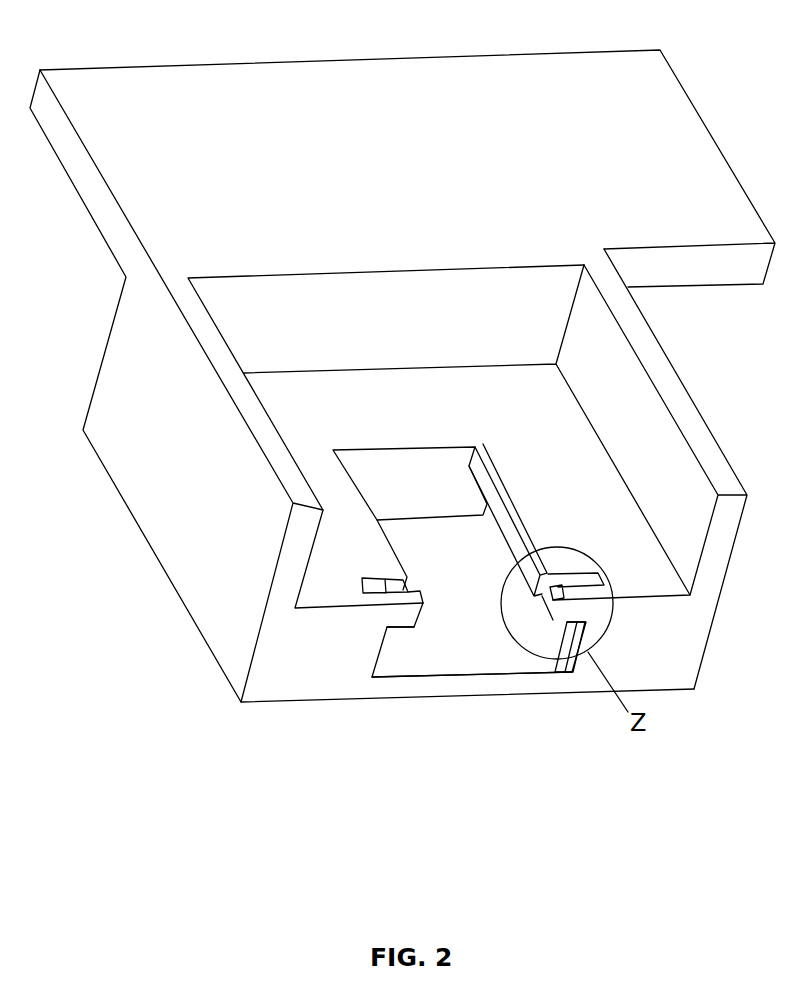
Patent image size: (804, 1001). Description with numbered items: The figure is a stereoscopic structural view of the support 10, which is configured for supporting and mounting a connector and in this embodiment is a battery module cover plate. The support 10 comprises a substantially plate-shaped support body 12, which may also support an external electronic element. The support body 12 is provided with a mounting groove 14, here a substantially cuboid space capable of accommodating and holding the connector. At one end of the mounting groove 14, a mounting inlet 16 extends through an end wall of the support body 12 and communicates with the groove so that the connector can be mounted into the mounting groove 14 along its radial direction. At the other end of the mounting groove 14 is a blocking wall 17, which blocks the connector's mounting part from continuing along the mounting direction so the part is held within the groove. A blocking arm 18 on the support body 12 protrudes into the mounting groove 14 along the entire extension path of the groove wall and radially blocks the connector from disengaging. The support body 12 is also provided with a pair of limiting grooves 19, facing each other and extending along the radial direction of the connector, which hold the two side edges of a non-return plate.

The support 10 is at (378, 41).
The support body 12 is at (658, 358).
The mounting groove 14 is at (415, 545).
The mounting inlet 16 is at (445, 640).
The blocking wall 17 is at (402, 482).
The blocking arm 18 is at (402, 572).
The limiting groove 19 is at (382, 582).